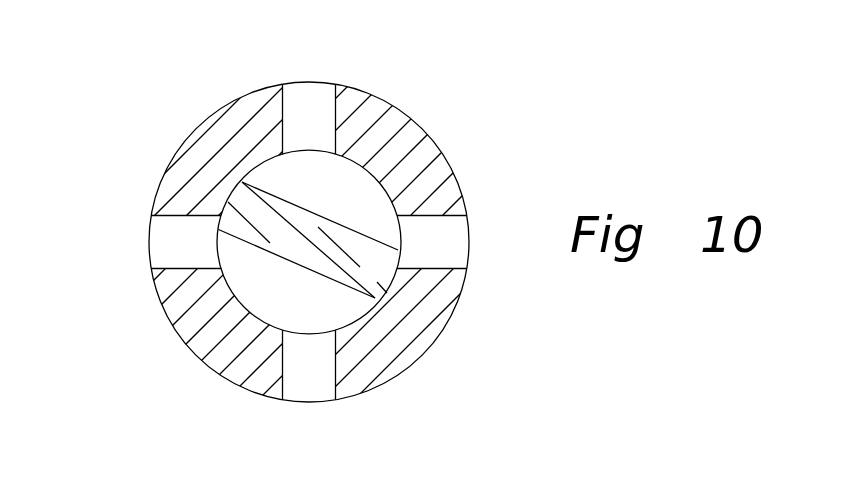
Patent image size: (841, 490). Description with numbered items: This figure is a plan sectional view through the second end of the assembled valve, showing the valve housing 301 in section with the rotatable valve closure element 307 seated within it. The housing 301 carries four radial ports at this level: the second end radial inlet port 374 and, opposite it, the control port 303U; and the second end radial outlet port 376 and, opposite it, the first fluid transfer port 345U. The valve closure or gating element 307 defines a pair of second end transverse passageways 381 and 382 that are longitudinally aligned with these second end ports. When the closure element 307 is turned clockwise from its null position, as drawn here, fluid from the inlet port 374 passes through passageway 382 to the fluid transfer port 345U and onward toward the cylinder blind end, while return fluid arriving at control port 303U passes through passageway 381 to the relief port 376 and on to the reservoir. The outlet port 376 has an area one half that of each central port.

The valve housing 301 is at (435, 368).
The control port 303U is at (298, 110).
The first fluid transfer port 345U is at (315, 383).
The second end radial inlet port 374 is at (173, 245).
The second end radial outlet port 376 is at (427, 235).
The valve closure element 307 is at (341, 254).
The second end transverse passageway 381 is at (354, 194).
The second end transverse passageway 382 is at (306, 307).